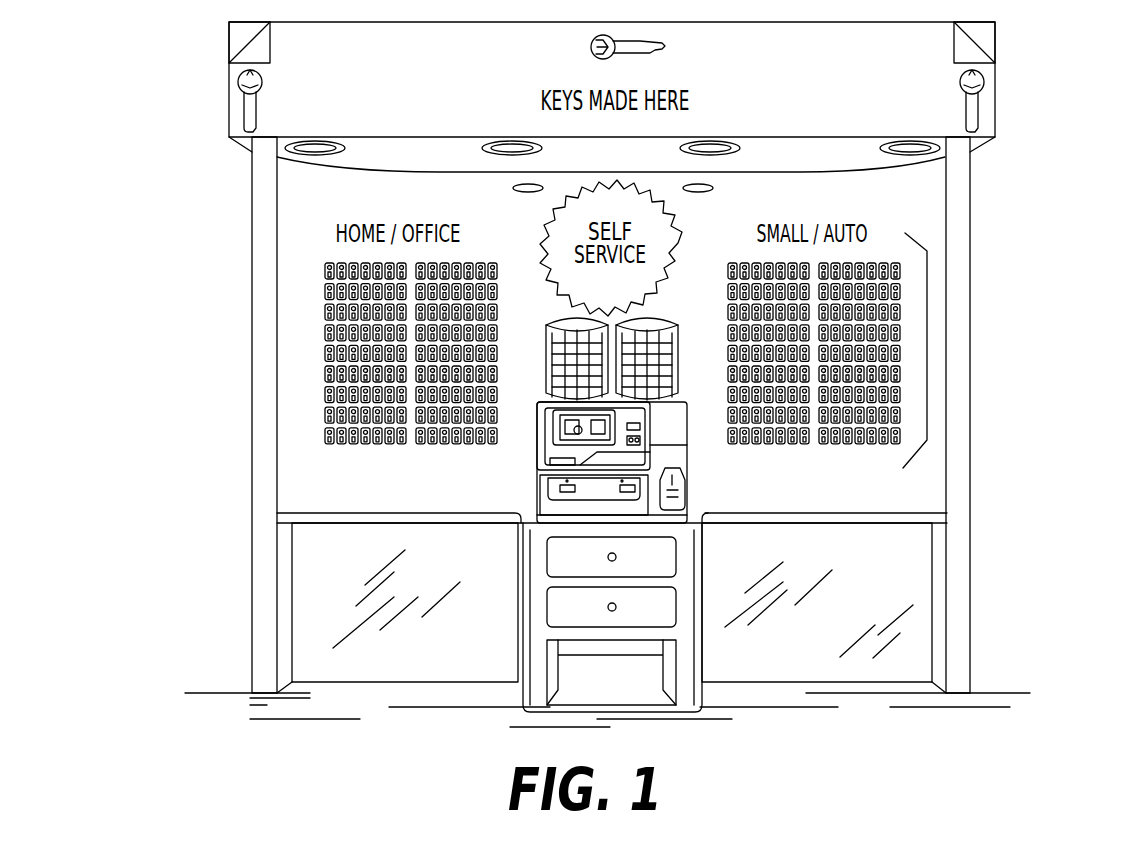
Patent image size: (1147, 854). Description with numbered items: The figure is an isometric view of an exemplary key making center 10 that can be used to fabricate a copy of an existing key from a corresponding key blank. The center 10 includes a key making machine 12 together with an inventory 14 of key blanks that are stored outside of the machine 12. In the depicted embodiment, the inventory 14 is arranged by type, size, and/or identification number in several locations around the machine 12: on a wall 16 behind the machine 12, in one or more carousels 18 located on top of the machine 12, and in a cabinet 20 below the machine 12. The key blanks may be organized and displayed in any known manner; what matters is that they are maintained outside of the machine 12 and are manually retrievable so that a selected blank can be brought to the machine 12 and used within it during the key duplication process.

The key making center 10 is at (1040, 68).
The key making machine 12 is at (690, 463).
The inventory of key blanks 14 is at (927, 352).
The wall 16 is at (970, 483).
The carousels 18 is at (594, 322).
The cabinet 20 is at (686, 565).